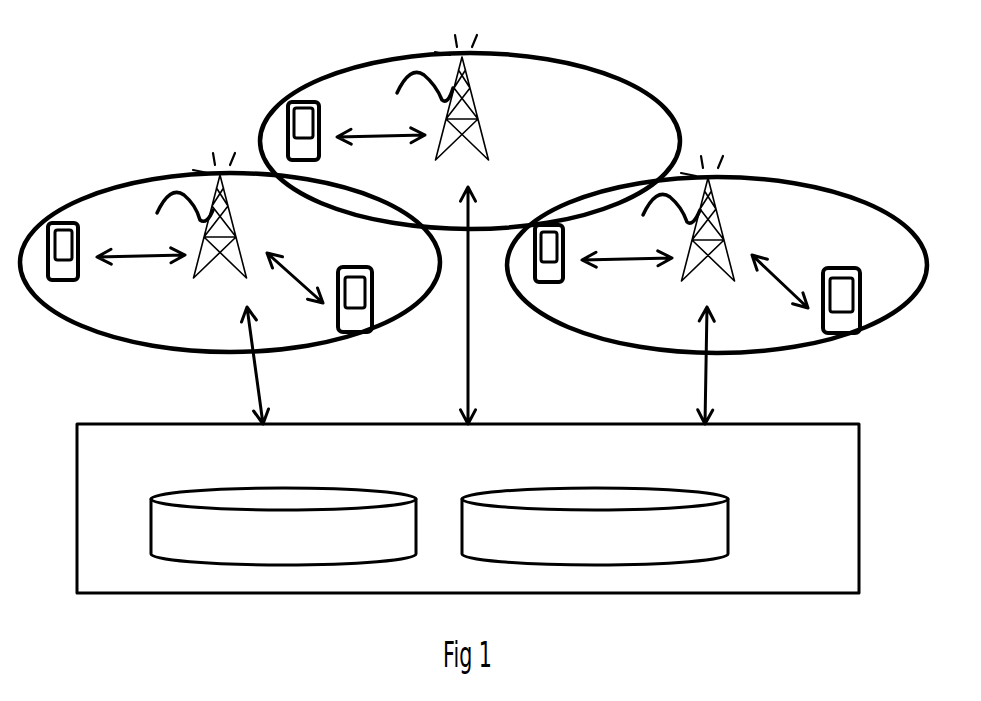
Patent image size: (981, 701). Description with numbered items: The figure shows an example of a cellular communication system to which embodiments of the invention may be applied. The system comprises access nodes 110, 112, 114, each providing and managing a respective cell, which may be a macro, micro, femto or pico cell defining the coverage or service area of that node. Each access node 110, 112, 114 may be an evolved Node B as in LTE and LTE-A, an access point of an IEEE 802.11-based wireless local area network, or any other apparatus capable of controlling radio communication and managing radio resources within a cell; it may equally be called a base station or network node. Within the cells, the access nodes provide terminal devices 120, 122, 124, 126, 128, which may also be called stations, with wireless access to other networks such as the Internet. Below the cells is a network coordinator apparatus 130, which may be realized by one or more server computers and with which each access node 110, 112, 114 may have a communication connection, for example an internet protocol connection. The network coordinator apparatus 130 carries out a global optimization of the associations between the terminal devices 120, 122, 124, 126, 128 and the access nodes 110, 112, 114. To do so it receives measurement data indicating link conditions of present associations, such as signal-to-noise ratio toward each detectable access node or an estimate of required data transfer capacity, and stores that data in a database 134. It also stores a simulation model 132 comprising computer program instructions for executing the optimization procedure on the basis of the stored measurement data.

The access node 110 is at (172, 215).
The access node 112 is at (413, 97).
The access node 114 is at (658, 218).
The terminal device 120 is at (355, 267).
The terminal device 122 is at (64, 222).
The terminal device 124 is at (305, 101).
The terminal device 126 is at (552, 224).
The terminal device 128 is at (843, 268).
The network coordinator apparatus 130 is at (468, 508).
The simulation model 132 is at (283, 526).
The database 134 is at (595, 526).